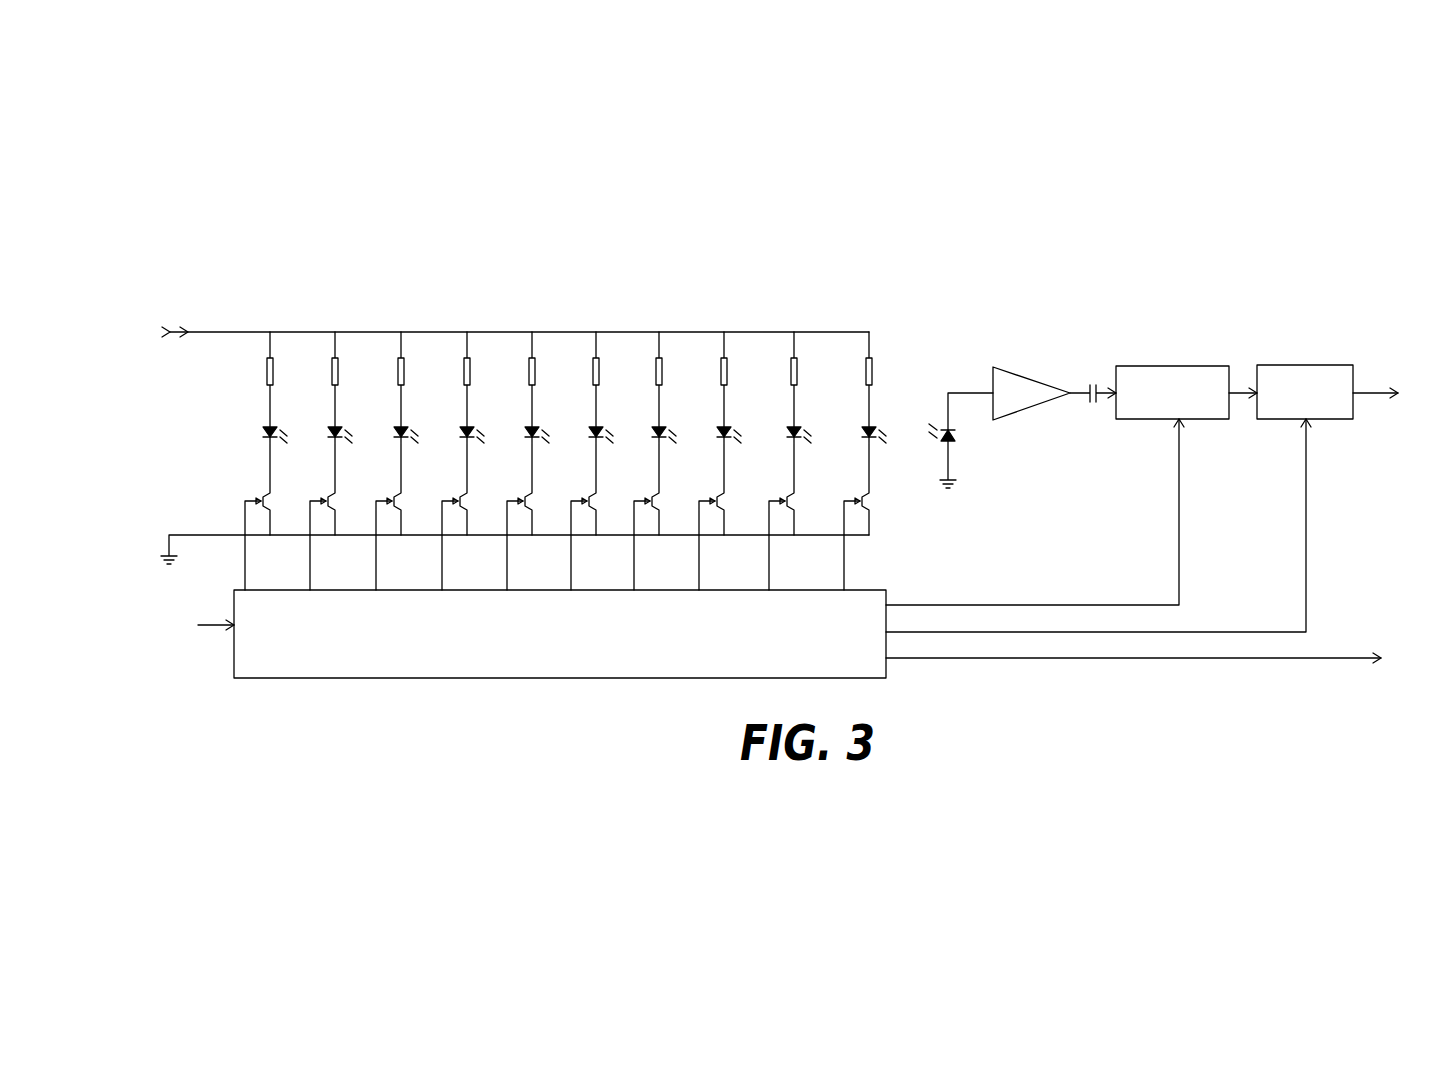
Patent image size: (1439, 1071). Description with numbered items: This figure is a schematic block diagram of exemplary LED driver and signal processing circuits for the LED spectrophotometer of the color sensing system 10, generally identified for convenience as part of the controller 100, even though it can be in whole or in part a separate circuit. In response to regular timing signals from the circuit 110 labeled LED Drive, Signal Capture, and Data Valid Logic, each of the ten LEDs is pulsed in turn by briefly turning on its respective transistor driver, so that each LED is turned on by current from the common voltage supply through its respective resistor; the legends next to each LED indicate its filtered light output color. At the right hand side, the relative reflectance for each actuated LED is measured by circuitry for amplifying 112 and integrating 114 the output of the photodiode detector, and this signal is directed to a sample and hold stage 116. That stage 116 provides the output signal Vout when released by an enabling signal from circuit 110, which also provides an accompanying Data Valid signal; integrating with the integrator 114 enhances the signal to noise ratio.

The color sensing system 10 is at (697, 250).
The controller 100 is at (877, 296).
The LED Drive, Signal Capture, & Data Valid Logic circuit 110 is at (874, 588).
The amplifying circuitry 112 is at (1023, 373).
The integrator 114 is at (1153, 366).
The sample and hold stage 116 is at (1273, 365).